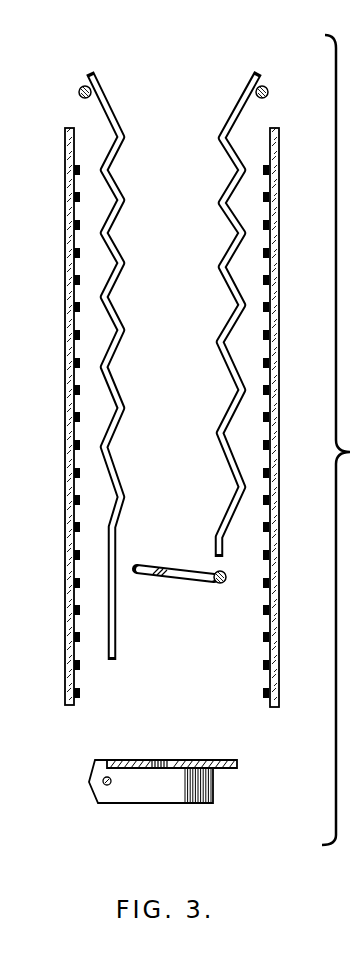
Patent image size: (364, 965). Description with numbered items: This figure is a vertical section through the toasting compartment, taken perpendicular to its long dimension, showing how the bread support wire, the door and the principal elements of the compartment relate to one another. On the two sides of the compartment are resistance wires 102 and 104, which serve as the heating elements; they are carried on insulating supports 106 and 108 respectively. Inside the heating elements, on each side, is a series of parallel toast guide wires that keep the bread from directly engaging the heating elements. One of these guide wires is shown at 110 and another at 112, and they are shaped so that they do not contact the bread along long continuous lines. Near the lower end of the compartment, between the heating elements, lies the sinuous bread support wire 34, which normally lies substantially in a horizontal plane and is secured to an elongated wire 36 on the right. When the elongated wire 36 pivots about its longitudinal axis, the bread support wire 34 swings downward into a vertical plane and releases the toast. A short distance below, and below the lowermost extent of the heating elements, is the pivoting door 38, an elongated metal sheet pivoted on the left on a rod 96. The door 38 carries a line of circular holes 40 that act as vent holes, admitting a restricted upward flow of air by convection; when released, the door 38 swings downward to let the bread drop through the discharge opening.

The resistance wire 102 is at (76, 270).
The resistance wire 104 is at (270, 240).
The insulating support 106 is at (66, 348).
The insulating support 108 is at (280, 338).
The toast guide wire 110 is at (126, 280).
The toast guide wire 112 is at (218, 342).
The bread support wire 34 is at (153, 566).
The elongated wire 36 is at (219, 584).
The pivoting door 38 is at (128, 760).
The circular holes 40 is at (177, 760).
The rod 96 is at (106, 786).